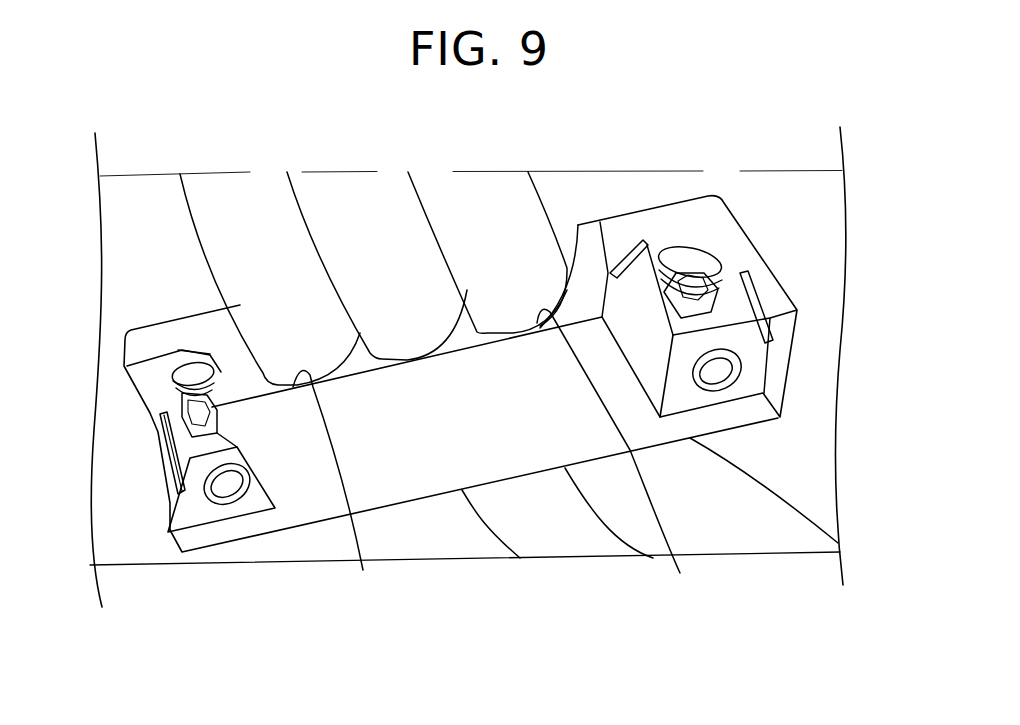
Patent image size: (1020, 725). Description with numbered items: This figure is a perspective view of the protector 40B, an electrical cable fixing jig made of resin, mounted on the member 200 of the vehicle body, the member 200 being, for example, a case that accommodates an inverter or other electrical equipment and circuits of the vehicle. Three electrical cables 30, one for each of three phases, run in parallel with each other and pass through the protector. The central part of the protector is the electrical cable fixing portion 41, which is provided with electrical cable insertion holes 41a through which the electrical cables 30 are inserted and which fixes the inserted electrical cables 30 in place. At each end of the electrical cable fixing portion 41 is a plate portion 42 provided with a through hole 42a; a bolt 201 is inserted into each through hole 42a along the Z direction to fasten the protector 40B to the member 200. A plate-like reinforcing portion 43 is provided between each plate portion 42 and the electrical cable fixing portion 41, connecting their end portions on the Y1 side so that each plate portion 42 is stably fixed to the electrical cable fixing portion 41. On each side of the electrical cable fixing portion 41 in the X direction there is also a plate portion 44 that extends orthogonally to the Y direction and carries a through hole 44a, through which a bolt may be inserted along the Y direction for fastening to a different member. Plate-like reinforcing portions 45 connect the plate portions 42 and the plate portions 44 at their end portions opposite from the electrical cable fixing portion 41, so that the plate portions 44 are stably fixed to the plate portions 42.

The electrical cable 30 is at (242, 188).
The protector 40B is at (313, 527).
The electrical cable fixing portion 41 is at (513, 465).
The electrical cable insertion hole 41a is at (504, 459).
The plate portion 42 is at (165, 335).
The through hole 42a is at (172, 378).
The reinforcing portion 43 is at (207, 353).
The plate portion 44 is at (233, 533).
The through hole 44a is at (218, 497).
The reinforcing portion 45 is at (168, 463).
The member 200 is at (810, 462).
The bolt 201 is at (160, 417).